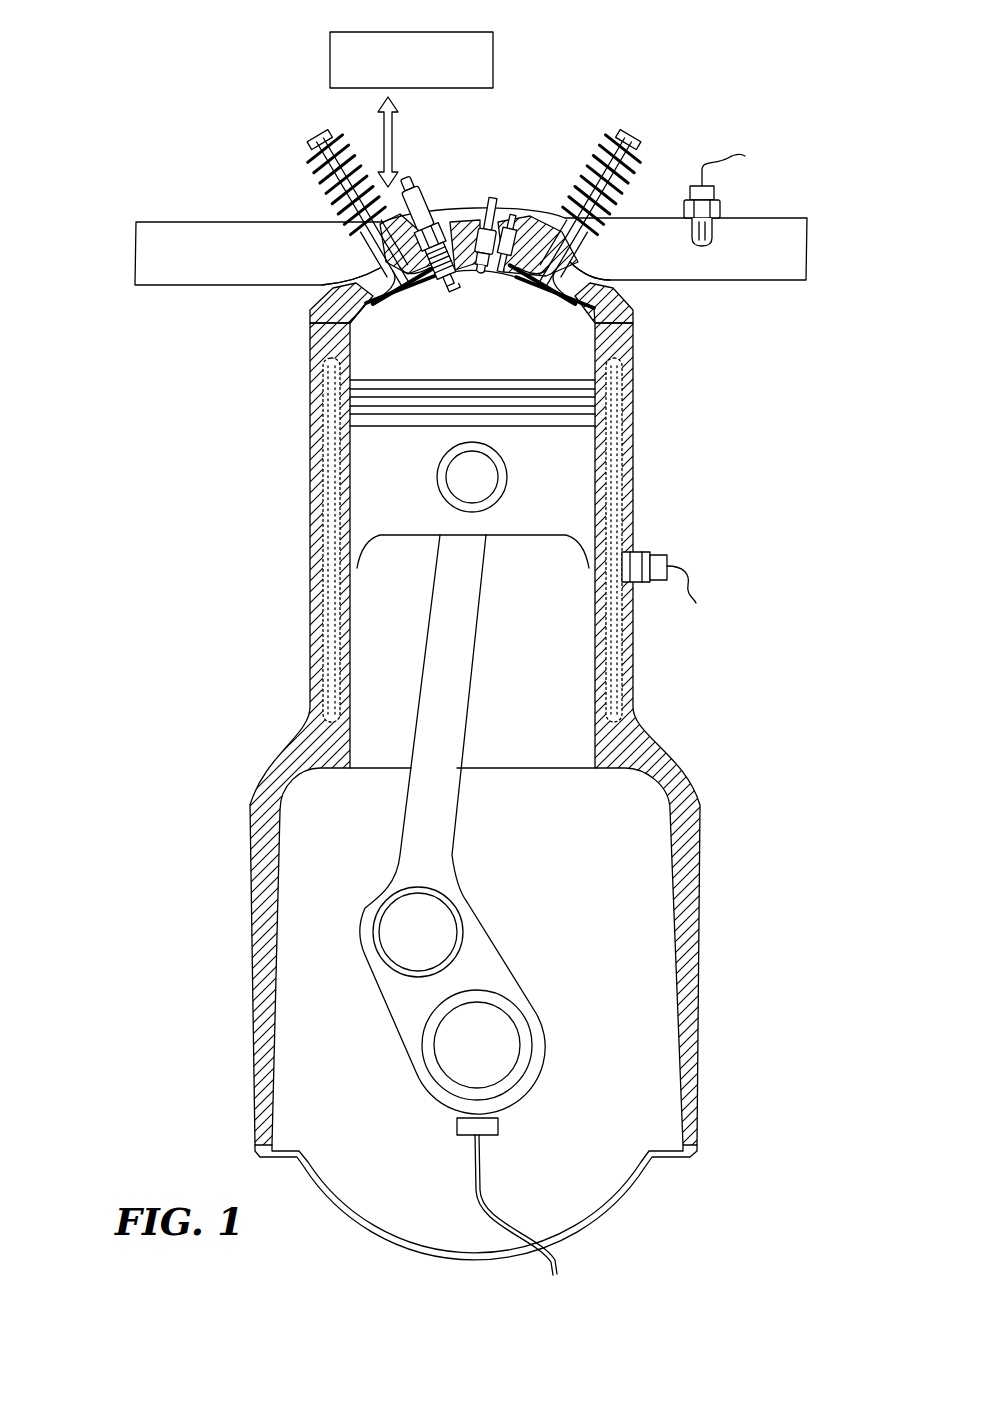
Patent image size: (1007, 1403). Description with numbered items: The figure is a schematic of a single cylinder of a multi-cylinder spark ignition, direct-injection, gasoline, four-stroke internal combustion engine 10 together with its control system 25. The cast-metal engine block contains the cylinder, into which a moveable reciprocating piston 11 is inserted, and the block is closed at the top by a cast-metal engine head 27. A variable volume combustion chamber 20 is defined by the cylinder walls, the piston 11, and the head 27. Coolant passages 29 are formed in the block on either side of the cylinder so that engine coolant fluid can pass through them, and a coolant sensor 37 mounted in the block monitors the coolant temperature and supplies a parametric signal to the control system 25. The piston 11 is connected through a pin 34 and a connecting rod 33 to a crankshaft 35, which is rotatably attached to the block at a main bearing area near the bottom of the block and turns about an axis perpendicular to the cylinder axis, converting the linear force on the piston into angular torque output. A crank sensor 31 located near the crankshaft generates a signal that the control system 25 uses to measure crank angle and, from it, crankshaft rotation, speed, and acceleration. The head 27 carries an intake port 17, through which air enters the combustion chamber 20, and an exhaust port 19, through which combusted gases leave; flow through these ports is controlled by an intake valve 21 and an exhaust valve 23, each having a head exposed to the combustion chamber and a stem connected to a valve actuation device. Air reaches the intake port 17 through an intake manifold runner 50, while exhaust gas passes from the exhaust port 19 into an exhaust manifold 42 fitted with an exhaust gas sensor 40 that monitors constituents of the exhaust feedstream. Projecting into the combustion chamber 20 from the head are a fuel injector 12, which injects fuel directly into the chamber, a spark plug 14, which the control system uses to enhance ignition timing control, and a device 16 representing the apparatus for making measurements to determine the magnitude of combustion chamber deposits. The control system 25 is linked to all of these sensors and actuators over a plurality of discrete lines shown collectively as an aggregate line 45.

The internal combustion engine 10 is at (176, 436).
The piston 11 is at (567, 483).
The fuel injector 12 is at (485, 215).
The spark plug 14 is at (420, 207).
The device 16 is at (511, 217).
The intake port 17 is at (338, 284).
The exhaust port 19 is at (593, 281).
The combustion chamber 20 is at (370, 360).
The intake valve 21 is at (375, 247).
The exhaust valve 23 is at (573, 258).
The control system 25 is at (493, 45).
The engine head 27 is at (640, 316).
The coolant passages 29 is at (630, 408).
The crank sensor 31 is at (453, 1125).
The connecting rod 33 is at (450, 635).
The pin 34 is at (467, 477).
The crankshaft 35 is at (417, 1046).
The coolant sensor 37 is at (655, 560).
The exhaust gas sensor 40 is at (720, 213).
The exhaust manifold 42 is at (795, 248).
The aggregate line 45 is at (385, 135).
The intake manifold runner 50 is at (208, 277).